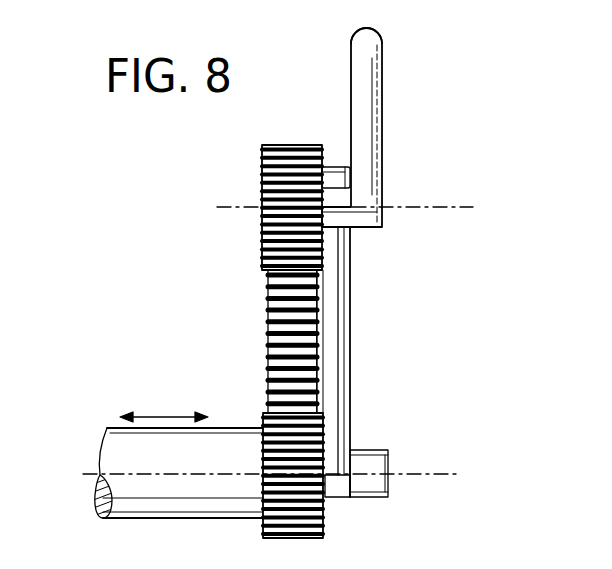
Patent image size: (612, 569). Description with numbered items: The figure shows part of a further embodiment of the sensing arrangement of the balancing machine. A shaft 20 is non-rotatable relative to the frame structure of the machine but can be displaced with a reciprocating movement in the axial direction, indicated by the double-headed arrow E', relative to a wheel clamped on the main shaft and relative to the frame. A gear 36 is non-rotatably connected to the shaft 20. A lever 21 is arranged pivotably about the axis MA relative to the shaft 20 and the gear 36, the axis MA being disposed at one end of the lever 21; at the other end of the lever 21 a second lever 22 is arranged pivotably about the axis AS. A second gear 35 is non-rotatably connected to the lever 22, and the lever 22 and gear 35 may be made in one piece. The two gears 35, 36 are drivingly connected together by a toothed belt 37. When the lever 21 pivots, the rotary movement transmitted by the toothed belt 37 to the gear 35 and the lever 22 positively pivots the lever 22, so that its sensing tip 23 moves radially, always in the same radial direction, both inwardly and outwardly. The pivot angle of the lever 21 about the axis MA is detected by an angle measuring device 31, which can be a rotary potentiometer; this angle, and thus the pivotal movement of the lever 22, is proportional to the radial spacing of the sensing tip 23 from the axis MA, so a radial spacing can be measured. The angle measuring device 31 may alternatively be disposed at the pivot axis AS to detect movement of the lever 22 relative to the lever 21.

The shaft 20 is at (125, 450).
The lever 21 is at (335, 345).
The second lever 22 is at (367, 122).
The sensing tip 23 is at (372, 31).
The angle measuring device 31 is at (370, 462).
The second gear 35 is at (277, 181).
The gear 36 is at (329, 480).
The toothed belt 37 is at (297, 341).
The axis AS is at (427, 207).
The axis MA is at (427, 474).
The direction of movement E' is at (164, 403).